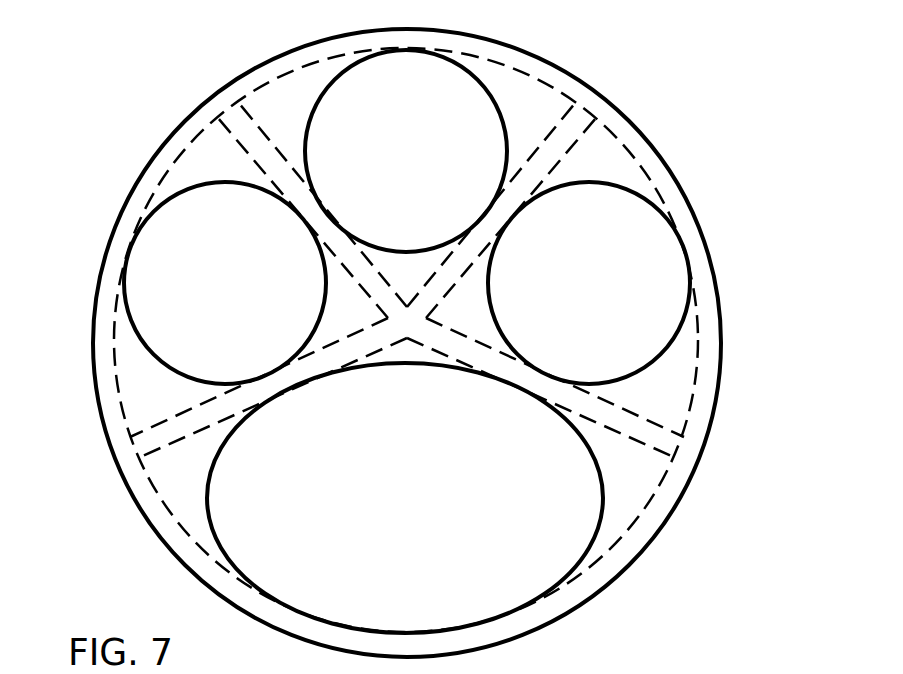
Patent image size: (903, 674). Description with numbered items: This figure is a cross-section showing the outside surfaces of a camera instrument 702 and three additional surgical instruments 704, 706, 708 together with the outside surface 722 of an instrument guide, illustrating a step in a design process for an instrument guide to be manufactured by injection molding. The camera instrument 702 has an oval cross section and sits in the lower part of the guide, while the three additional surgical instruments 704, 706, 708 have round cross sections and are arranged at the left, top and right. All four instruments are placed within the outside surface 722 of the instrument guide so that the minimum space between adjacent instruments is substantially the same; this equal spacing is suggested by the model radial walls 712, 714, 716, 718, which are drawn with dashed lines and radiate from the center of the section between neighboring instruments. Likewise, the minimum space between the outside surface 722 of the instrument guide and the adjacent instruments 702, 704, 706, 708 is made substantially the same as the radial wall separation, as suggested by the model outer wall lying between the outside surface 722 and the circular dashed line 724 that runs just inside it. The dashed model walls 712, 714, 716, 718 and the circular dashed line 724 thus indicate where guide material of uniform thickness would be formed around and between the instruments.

The camera instrument 702 is at (605, 495).
The surgical instrument 704 is at (190, 187).
The surgical instrument 706 is at (313, 110).
The surgical instrument 708 is at (630, 193).
The model radial wall 712 is at (150, 430).
The model radial wall 714 is at (237, 142).
The model radial wall 716 is at (560, 123).
The model radial wall 718 is at (665, 427).
The outside surface of the instrument guide 722 is at (580, 76).
The circular dashed line 724 is at (622, 138).